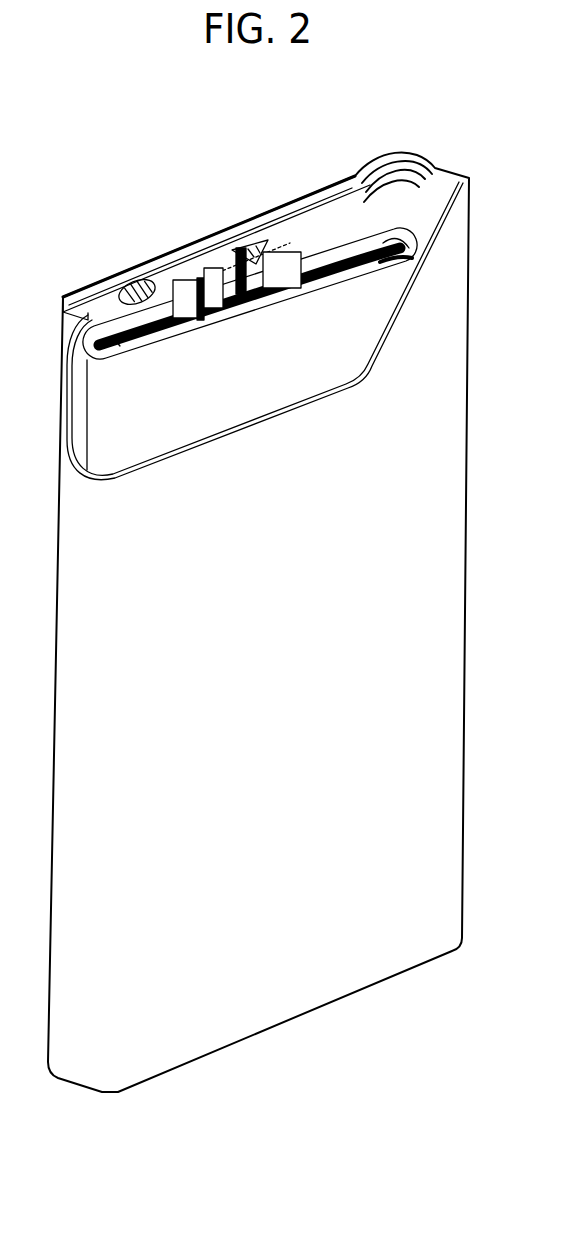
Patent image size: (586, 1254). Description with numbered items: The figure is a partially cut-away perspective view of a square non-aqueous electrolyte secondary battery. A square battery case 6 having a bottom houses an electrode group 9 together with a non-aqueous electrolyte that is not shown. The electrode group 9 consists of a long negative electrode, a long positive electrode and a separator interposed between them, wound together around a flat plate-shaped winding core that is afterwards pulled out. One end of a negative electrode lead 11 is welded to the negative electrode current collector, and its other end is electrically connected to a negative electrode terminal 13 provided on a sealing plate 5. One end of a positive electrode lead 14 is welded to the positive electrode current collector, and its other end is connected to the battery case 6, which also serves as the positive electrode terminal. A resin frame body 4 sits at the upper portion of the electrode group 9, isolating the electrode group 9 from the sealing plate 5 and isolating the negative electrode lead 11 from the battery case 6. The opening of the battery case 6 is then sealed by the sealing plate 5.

The resin frame body 4 is at (358, 173).
The sealing plate 5 is at (307, 190).
The battery case 6 is at (428, 790).
The electrode group 9 is at (263, 397).
The negative electrode lead 11 is at (187, 343).
The negative electrode terminal 13 is at (205, 233).
The positive electrode lead 14 is at (300, 267).